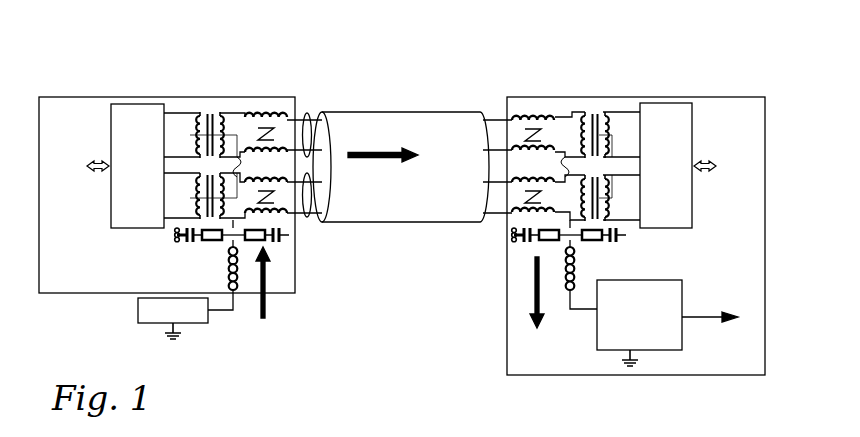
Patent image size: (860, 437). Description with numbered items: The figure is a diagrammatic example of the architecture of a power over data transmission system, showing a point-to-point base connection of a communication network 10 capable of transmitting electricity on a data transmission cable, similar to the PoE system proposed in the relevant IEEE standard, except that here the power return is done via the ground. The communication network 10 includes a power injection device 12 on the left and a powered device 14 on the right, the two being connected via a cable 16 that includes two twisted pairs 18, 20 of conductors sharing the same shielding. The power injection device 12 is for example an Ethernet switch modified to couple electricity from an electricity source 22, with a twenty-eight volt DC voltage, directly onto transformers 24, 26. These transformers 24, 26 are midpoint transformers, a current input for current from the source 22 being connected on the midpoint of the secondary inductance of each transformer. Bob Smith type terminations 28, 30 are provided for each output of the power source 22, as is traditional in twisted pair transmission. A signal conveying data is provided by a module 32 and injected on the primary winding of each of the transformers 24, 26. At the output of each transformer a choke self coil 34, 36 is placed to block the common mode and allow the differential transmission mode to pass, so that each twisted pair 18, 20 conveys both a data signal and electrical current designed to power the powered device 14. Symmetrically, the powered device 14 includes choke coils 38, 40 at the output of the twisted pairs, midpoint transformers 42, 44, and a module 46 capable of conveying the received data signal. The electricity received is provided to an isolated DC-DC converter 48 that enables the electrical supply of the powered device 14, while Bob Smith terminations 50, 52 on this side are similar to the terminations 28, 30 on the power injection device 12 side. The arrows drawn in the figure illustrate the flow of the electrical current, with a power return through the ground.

The communication network 10 is at (655, 83).
The power injection device 12 is at (220, 97).
The powered device 14 is at (757, 220).
The cable 16 is at (405, 115).
The twisted pair 18 is at (308, 113).
The twisted pair 20 is at (292, 218).
The electricity source 22 is at (155, 312).
The transformer 24 is at (197, 124).
The transformer 26 is at (197, 203).
The Bob Smith termination 28 is at (208, 244).
The Bob Smith termination 30 is at (275, 255).
The module 32 is at (111, 118).
The choke self coil 34 is at (264, 108).
The choke self coil 36 is at (292, 220).
The choke coil 38 is at (540, 110).
The choke coil 40 is at (512, 228).
The midpoint transformer 42 is at (599, 108).
The midpoint transformer 44 is at (636, 235).
The module 46 is at (682, 123).
The isolated DC-DC converter 48 is at (670, 337).
The Bob Smith termination 50 is at (528, 258).
The Bob Smith termination 52 is at (590, 246).